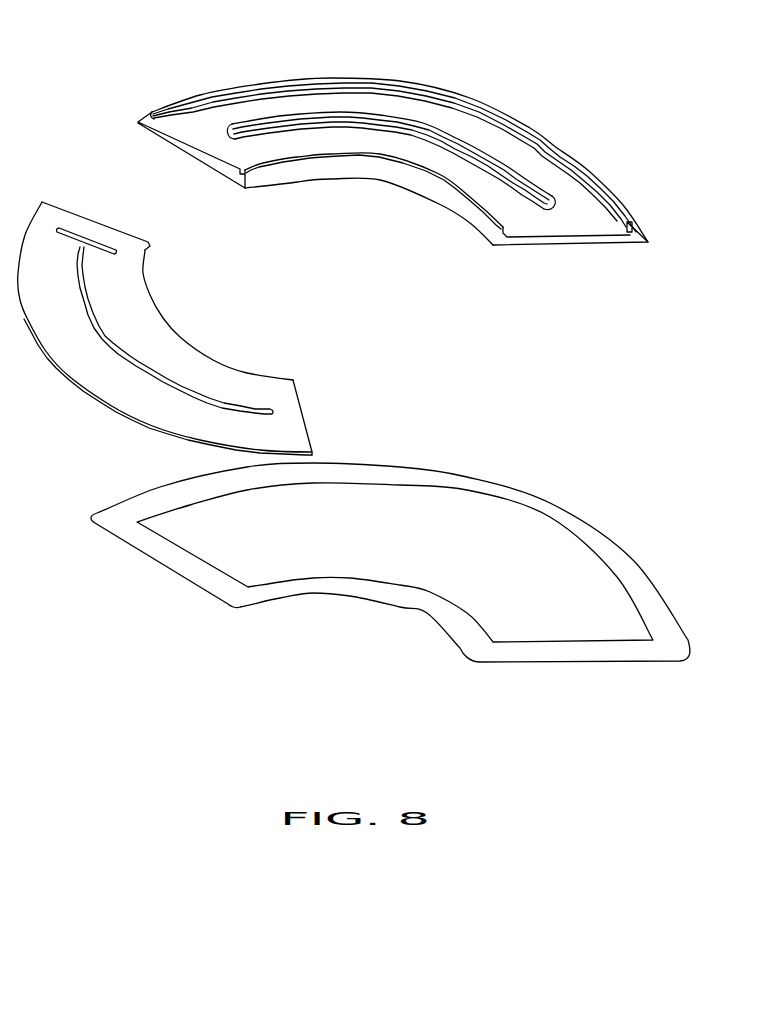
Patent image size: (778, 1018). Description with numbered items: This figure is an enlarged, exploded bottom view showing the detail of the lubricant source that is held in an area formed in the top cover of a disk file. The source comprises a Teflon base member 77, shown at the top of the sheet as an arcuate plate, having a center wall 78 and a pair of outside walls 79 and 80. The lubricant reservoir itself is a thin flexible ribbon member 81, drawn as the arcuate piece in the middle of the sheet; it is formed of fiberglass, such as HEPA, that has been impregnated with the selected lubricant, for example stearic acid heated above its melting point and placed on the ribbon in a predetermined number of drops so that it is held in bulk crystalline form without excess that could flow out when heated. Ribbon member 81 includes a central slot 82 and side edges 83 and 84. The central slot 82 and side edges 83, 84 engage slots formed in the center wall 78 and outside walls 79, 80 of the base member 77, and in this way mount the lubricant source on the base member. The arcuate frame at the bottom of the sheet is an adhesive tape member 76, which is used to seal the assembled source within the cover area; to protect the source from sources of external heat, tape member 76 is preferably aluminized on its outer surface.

The adhesive tape member 76 is at (393, 593).
The Teflon base member 77 is at (163, 142).
The center wall 78 is at (404, 122).
The outside wall 79 is at (387, 170).
The outside wall 80 is at (403, 87).
The thin flexible ribbon member 81 is at (288, 408).
The central slot 82 is at (143, 365).
The side edge 83 is at (148, 287).
The side edge 84 is at (72, 375).